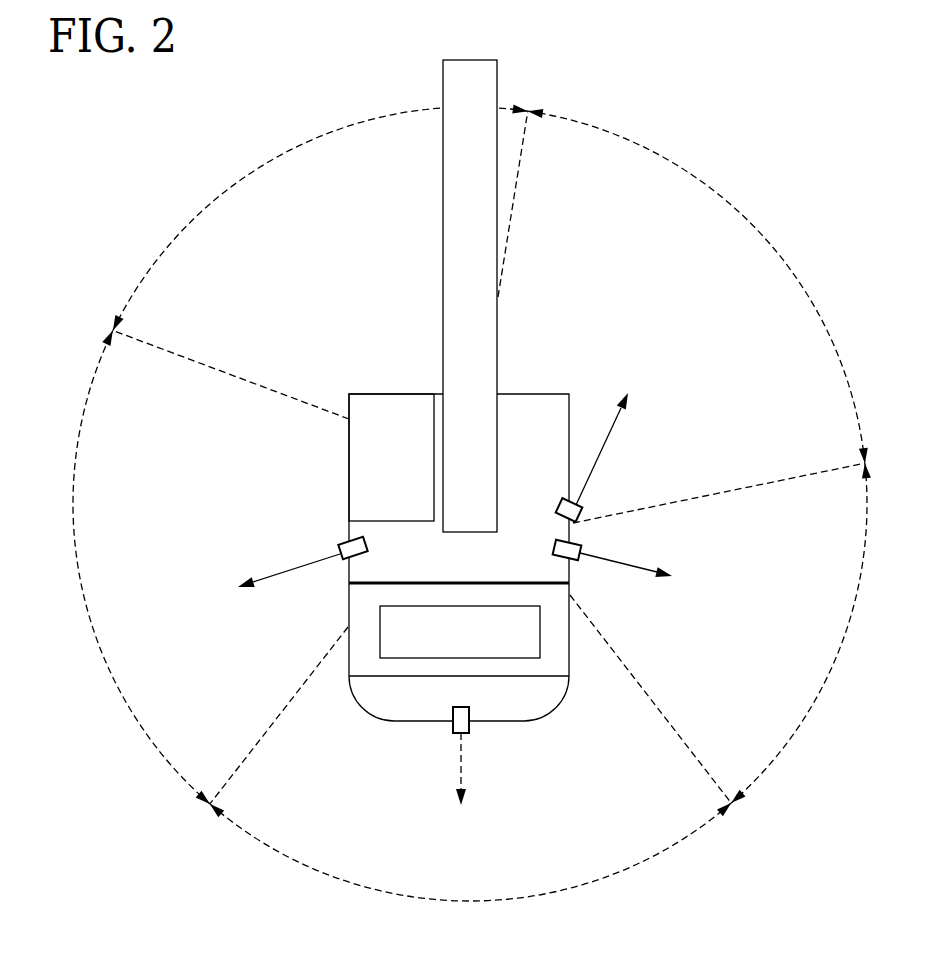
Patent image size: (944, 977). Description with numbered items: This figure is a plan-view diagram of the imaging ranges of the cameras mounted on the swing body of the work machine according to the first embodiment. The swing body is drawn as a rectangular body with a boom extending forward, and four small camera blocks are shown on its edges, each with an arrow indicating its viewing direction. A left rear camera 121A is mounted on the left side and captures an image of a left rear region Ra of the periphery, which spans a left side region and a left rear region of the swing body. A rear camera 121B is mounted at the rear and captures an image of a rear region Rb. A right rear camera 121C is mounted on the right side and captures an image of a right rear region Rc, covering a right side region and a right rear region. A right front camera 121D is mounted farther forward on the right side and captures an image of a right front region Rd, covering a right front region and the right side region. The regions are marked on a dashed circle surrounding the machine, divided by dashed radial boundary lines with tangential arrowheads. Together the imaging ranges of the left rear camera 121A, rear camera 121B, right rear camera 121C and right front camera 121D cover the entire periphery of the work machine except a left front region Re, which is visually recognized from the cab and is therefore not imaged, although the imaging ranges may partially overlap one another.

The left rear camera 121A is at (345, 558).
The rear camera 121B is at (452, 729).
The right rear camera 121C is at (583, 549).
The right front camera 121D is at (580, 507).
The left rear region Ra is at (127, 567).
The rear region Rb is at (470, 868).
The right rear region Rc is at (802, 633).
The right front region Rd is at (696, 287).
The left front region Re is at (320, 219).